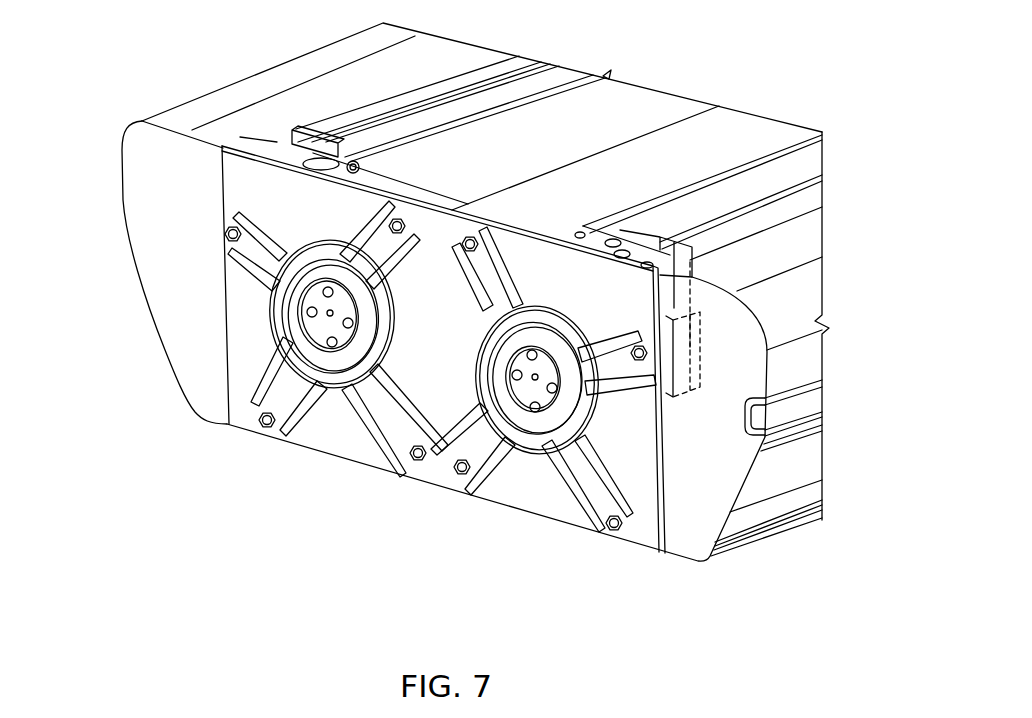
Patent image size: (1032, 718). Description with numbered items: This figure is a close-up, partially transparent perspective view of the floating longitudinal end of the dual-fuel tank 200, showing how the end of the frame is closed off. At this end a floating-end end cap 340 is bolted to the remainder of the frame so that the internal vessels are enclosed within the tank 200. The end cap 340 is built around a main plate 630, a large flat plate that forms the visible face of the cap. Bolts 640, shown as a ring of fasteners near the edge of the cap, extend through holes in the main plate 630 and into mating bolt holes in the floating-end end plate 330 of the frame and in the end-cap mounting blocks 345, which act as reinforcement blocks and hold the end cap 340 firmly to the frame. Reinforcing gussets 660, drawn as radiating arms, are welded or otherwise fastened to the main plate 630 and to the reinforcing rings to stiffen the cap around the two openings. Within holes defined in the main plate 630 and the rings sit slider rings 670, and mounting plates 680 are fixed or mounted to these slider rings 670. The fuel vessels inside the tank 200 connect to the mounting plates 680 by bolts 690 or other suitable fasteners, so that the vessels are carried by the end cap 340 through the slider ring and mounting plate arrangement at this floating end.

The tank 200 is at (243, 533).
The floating-end end plate 330 is at (693, 540).
The floating-end end cap 340 is at (404, 349).
The main plate 630 is at (305, 440).
The end-cap mounting blocks 345 is at (700, 348).
The bolts 640 is at (460, 478).
The reinforcing gussets 660 is at (255, 280).
The slider rings 670 is at (348, 355).
The mounting plates 680 is at (320, 338).
The bolts 690 is at (541, 350).